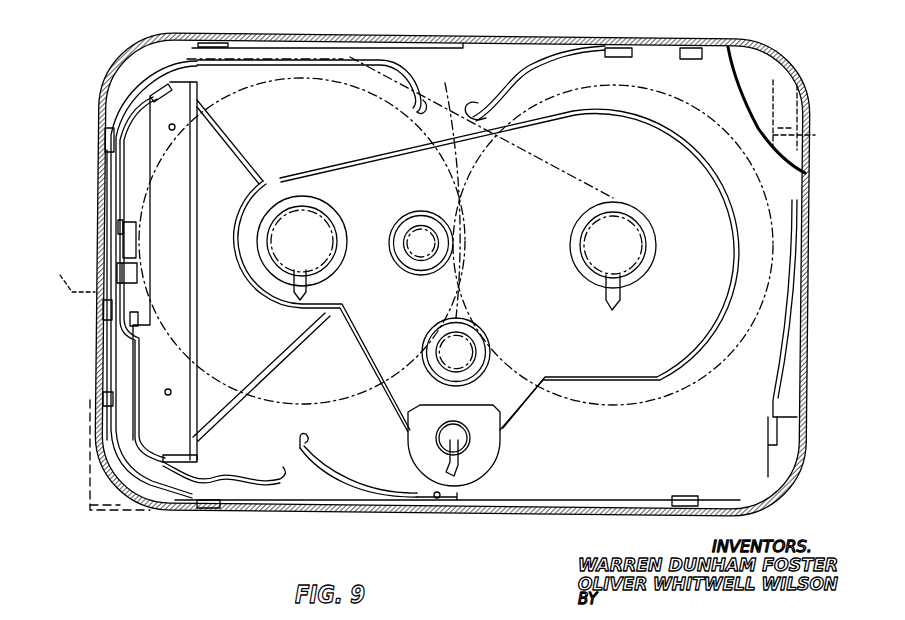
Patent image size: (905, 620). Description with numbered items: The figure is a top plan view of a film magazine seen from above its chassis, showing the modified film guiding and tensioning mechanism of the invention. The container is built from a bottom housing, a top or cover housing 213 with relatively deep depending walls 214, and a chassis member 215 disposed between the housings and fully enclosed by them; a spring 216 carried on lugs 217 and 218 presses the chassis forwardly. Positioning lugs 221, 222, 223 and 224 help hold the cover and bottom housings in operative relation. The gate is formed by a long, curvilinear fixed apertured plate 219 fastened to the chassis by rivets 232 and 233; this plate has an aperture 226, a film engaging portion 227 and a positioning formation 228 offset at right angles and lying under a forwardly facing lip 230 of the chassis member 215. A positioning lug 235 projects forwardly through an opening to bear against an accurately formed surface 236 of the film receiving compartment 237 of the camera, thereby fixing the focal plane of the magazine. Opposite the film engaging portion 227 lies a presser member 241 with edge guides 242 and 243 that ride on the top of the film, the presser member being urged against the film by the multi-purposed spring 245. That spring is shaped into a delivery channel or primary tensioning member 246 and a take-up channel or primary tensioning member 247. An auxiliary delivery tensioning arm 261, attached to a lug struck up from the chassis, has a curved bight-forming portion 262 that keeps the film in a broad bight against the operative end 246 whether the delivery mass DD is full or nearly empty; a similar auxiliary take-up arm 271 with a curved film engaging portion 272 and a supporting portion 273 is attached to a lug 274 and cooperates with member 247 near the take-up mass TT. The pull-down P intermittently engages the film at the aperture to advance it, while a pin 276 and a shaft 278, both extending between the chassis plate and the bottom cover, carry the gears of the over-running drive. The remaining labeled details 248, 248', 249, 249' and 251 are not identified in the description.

The top or cover housing 213 is at (745, 70).
The depending walls 214 is at (806, 297).
The chassis member 215 is at (457, 304).
The spring 216 is at (780, 397).
The lug 217 is at (810, 115).
The lug 218 is at (777, 432).
The fixed apertured plate 219 is at (358, 38).
The positioning lug 221 is at (220, 42).
The positioning lug 222 is at (213, 508).
The positioning lug 223 is at (698, 48).
The positioning lug 224 is at (684, 506).
The aperture 226 is at (110, 248).
The film engaging portion 227 is at (105, 222).
The positioning formation 228 is at (135, 358).
The forwardly facing lip 230 is at (155, 240).
The rivet 232 is at (175, 130).
The rivet 233 is at (171, 390).
The positioning lug 235 is at (103, 311).
The accurately formed surface 236 is at (100, 468).
The film receiving compartment 237 is at (115, 497).
The presser member 241 is at (122, 205).
The edge guide 242 is at (107, 145).
The edge guide 243 is at (103, 400).
The multi-purposed spring 245 is at (272, 80).
The primary tensioning member 246 is at (416, 106).
The primary tensioning member 247 is at (276, 477).
The clip 248 is at (152, 225).
The clip 248' is at (133, 61).
The stop 249 is at (157, 311).
The bar 249' is at (172, 430).
The block 251 is at (137, 273).
The auxiliary delivery tensioning arm 261 is at (527, 64).
The film engaging and bight-forming curved portion 262 is at (472, 114).
The auxiliary take-up arm 271 is at (355, 497).
The film engaging curved portion 272 is at (308, 453).
The supporting portion 273 is at (388, 503).
The lug 274 is at (452, 500).
The pin 276 is at (452, 350).
The shaft 278 is at (430, 243).
The pull-down P is at (72, 272).
The take-up mass TT is at (348, 214).
The delivery mass DD is at (659, 221).